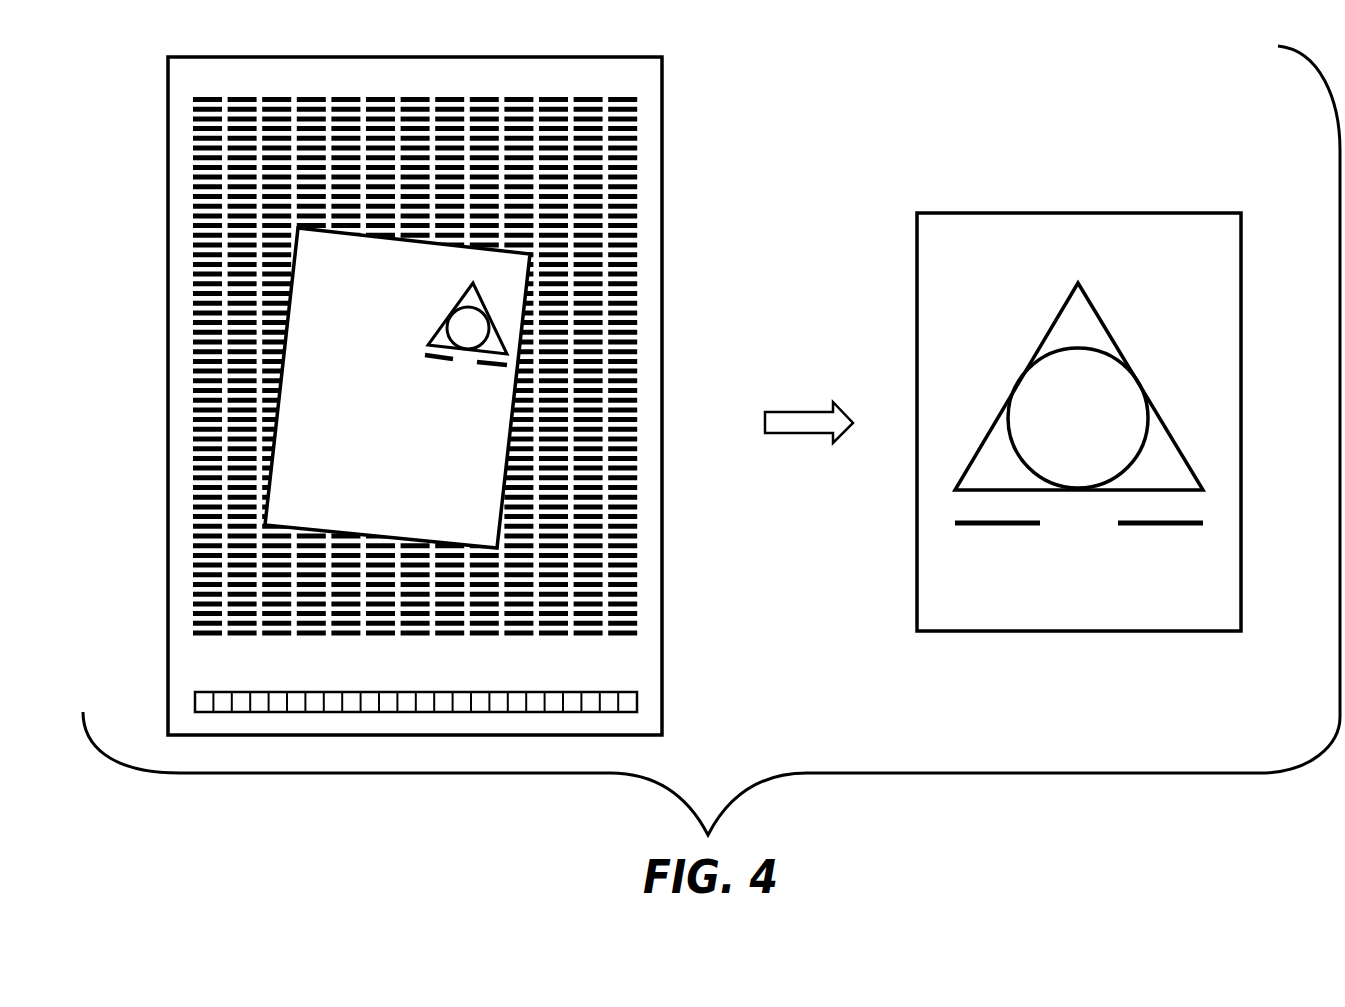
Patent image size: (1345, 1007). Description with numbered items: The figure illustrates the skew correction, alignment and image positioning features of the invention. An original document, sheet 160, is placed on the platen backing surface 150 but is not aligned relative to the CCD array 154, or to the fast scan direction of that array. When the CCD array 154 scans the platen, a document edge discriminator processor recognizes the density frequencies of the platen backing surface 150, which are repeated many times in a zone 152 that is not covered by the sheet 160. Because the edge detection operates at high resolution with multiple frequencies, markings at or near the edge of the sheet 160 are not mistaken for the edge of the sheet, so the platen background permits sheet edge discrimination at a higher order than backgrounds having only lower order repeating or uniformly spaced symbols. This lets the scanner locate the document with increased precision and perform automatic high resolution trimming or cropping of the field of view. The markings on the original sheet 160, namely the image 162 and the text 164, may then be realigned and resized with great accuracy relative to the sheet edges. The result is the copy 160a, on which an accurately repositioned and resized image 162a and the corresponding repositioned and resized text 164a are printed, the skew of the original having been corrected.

The platen backing surface 150 is at (128, 544).
The zone 152 is at (183, 275).
The CCD array 154 is at (644, 679).
The sheet 160 is at (447, 474).
The image 162 is at (463, 310).
The text 164 is at (487, 363).
The copy 160a is at (1043, 224).
The repositioned and resized image 162a is at (1085, 330).
The restored dashed line marks 164a is at (1160, 527).